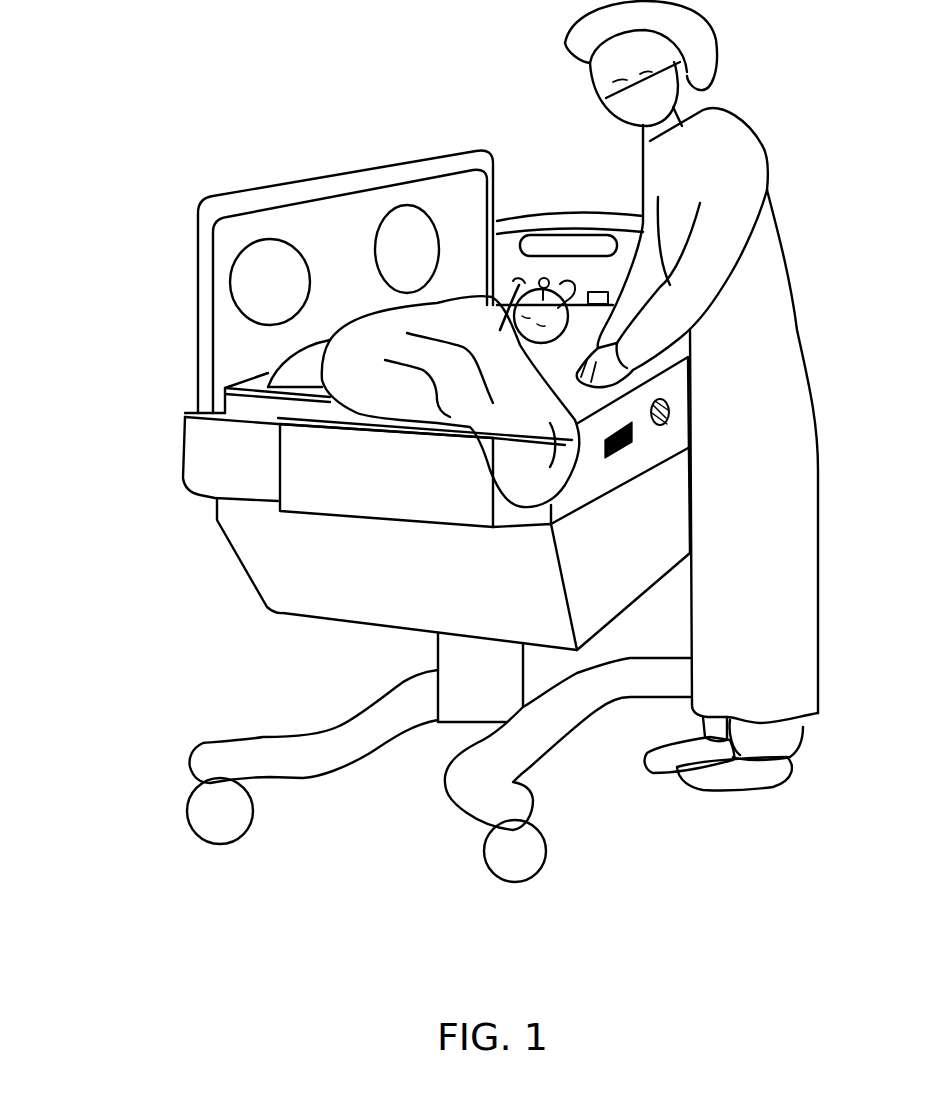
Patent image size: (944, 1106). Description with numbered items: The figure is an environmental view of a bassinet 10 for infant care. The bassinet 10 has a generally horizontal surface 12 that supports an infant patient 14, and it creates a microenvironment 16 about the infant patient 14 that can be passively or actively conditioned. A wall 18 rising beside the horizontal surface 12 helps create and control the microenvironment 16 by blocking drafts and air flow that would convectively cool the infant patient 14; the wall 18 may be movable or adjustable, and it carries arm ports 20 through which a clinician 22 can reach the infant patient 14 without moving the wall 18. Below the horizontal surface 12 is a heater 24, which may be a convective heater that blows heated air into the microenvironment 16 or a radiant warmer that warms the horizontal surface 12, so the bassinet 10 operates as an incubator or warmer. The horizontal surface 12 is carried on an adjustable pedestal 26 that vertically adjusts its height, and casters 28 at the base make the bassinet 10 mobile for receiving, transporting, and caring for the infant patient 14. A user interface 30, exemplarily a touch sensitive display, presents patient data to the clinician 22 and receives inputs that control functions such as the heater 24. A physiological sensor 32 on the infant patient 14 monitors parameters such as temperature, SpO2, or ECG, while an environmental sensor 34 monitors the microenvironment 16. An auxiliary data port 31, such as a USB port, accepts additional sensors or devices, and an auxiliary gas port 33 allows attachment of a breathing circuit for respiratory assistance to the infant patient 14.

The bassinet 10 is at (108, 587).
The horizontal surface 12 is at (233, 405).
The infant patient 14 is at (486, 338).
The microenvironment 16 is at (268, 366).
The wall 18 is at (223, 238).
The arm ports 20 is at (257, 242).
The clinician 22 is at (778, 333).
The heater 24 is at (410, 486).
The adjustable pedestal 26 is at (457, 662).
The casters 28 is at (233, 822).
The user interface 30 is at (568, 236).
The auxiliary data port 31 is at (621, 447).
The physiological sensor 32 is at (513, 286).
The auxiliary gas port 33 is at (663, 427).
The environmental sensor 34 is at (606, 291).